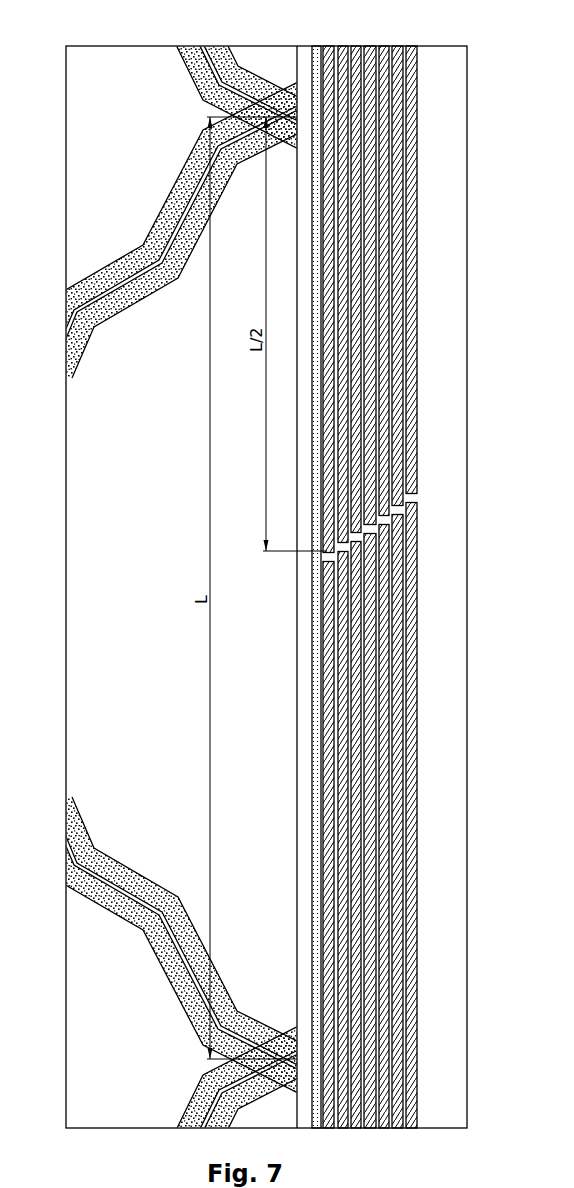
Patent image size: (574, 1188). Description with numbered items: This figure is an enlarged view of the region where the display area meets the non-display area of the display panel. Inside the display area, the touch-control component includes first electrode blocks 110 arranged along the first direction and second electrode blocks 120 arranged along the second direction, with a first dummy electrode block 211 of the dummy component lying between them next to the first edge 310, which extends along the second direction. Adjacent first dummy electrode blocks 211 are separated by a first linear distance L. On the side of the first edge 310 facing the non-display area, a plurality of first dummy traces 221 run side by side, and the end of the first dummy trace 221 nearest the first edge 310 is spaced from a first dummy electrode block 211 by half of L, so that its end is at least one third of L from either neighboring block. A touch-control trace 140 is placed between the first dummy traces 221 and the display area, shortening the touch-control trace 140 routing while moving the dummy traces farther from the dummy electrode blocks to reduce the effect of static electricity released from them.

The first electrode block 110 is at (89, 520).
The second electrode block 120 is at (147, 68).
The first dummy electrode block 211 is at (297, 128).
The first dummy trace 221 is at (314, 187).
The first edge 310 is at (298, 588).
The touch-control trace 140 is at (314, 623).